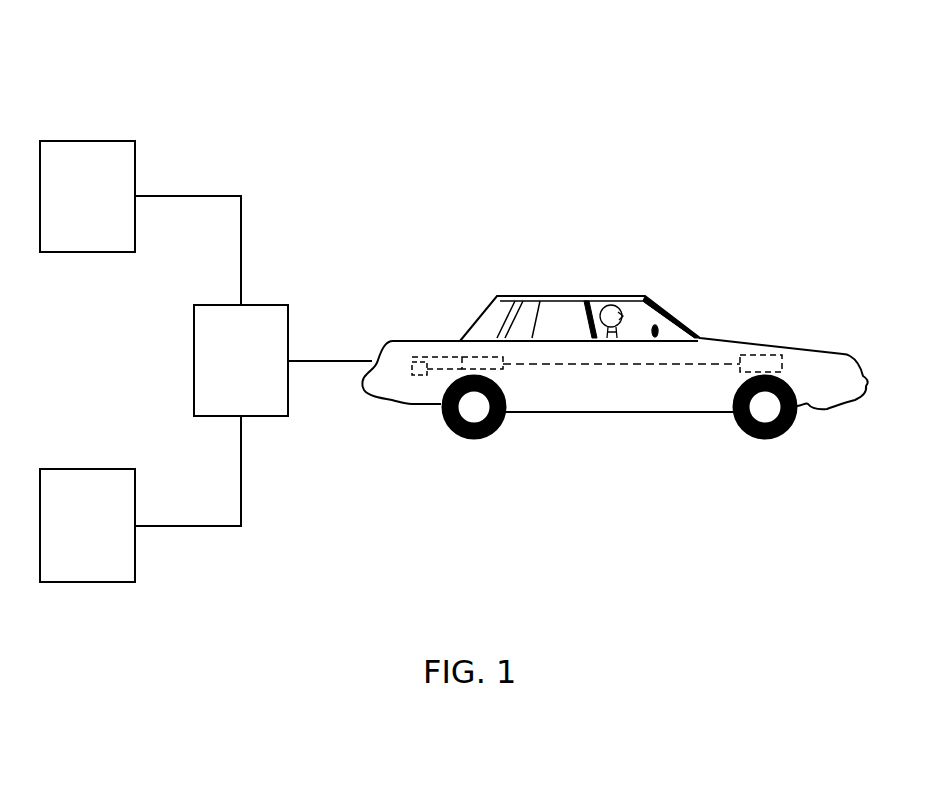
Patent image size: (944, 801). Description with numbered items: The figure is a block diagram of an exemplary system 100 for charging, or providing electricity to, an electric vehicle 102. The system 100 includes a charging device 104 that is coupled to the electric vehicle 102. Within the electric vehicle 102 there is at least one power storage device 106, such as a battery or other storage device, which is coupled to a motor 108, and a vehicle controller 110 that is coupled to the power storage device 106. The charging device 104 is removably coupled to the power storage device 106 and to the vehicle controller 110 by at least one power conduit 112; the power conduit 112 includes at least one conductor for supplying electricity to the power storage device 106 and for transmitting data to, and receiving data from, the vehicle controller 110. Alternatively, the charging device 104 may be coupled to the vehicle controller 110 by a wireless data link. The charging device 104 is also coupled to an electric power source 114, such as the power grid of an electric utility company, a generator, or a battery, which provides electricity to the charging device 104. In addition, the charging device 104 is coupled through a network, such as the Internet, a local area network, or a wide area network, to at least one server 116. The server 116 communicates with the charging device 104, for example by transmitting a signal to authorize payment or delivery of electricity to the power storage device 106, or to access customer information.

The system 100 is at (720, 58).
The electric vehicle 102 is at (715, 280).
The charging device 104 is at (273, 305).
The power storage device 106 is at (463, 357).
The motor 108 is at (762, 355).
The vehicle controller 110 is at (413, 374).
The power conduit 112 is at (318, 361).
The electric power source 114 is at (88, 469).
The server 116 is at (88, 141).